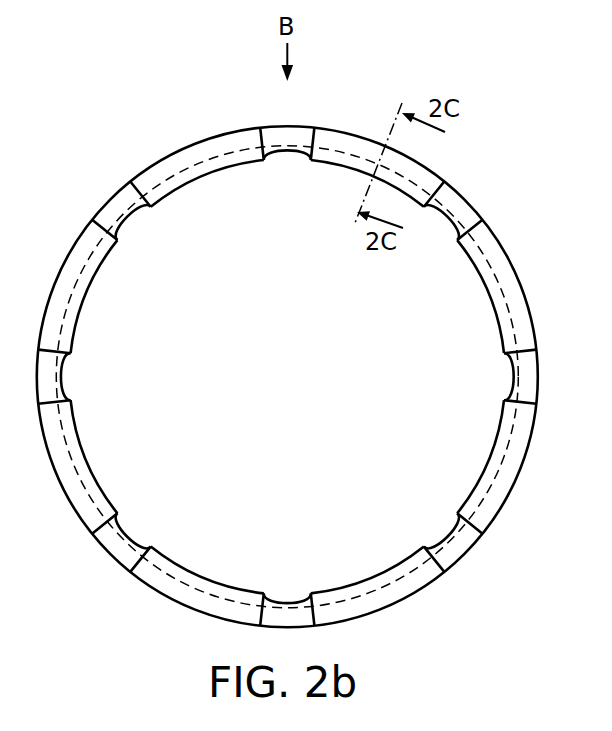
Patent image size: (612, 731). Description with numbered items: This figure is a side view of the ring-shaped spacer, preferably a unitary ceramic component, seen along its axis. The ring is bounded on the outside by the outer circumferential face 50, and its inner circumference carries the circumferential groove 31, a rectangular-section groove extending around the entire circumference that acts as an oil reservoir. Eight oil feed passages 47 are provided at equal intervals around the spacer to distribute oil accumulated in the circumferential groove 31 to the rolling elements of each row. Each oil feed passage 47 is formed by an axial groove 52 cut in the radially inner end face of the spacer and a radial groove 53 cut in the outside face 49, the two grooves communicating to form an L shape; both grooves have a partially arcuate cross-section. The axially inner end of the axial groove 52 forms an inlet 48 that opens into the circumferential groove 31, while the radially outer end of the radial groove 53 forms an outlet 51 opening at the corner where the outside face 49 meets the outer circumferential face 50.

The circumferential groove 31 is at (503, 312).
The oil feed passage 47 is at (275, 168).
The inlet 48 is at (289, 153).
The outside face 49 is at (55, 322).
The outer circumferential face 50 is at (65, 252).
The outlet 51 is at (283, 126).
The axial groove 52 is at (299, 197).
The radial groove 53 is at (285, 138).